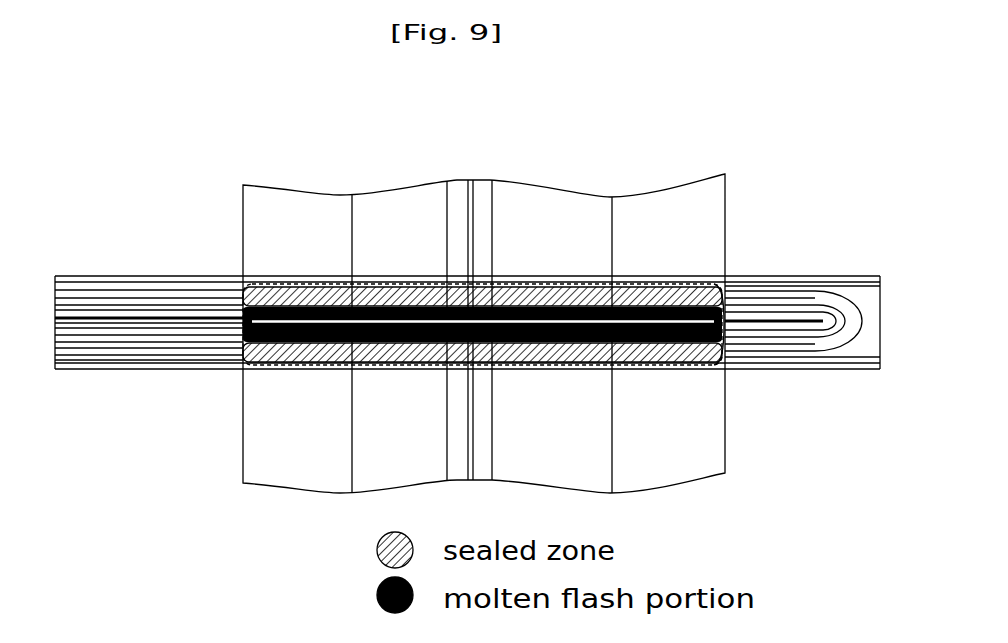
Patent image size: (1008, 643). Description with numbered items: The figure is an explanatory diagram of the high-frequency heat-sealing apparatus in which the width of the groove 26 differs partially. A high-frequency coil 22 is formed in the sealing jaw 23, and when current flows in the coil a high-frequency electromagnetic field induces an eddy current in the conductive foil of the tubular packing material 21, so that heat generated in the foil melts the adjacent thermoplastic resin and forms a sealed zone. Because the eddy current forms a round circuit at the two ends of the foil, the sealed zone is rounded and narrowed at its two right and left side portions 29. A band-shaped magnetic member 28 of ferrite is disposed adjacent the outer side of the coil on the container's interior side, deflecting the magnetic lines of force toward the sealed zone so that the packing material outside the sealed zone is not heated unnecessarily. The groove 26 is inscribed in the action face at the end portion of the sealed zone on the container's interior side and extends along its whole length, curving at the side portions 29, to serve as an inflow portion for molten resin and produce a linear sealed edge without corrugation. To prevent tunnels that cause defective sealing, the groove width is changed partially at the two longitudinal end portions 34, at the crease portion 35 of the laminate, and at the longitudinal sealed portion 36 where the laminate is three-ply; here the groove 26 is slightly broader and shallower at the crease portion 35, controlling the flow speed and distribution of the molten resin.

The tubular packing material 21 is at (676, 181).
The high-frequency coil 22 is at (826, 296).
The sealing jaw 23 is at (103, 252).
The groove 26 is at (133, 292).
The magnetic member 28 is at (870, 281).
The two right and left side portions 29 is at (716, 276).
The two longitudinal end portions 34 is at (729, 372).
The crease portion 35 is at (619, 372).
The longitudinal sealed portion 36 is at (487, 373).